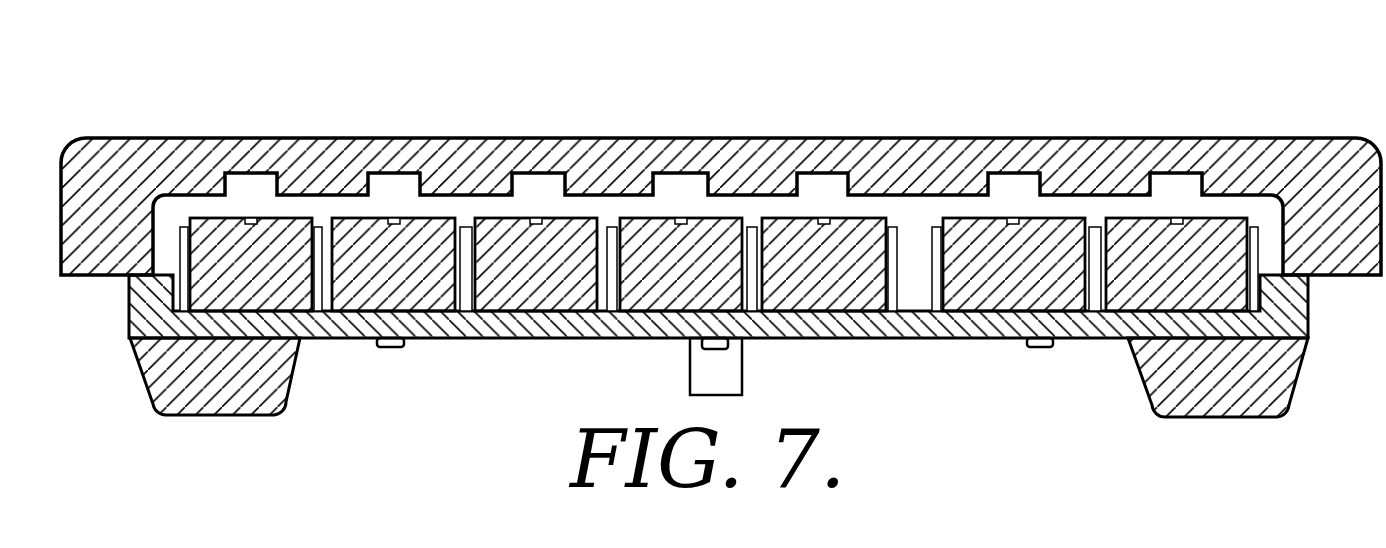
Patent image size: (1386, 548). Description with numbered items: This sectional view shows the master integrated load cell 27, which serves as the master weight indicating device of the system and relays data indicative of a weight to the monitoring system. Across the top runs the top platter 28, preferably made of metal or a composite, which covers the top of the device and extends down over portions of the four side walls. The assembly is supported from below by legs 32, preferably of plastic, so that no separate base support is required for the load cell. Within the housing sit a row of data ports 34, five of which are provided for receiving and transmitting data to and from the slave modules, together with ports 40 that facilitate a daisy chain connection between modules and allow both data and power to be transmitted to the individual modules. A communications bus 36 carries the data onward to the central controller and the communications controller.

The master integrated load cell 27 is at (721, 248).
The top platter 28 is at (207, 143).
The legs 32 is at (208, 408).
The data ports 34 is at (297, 227).
The communications bus 36 is at (388, 348).
The ports 40 is at (1138, 227).